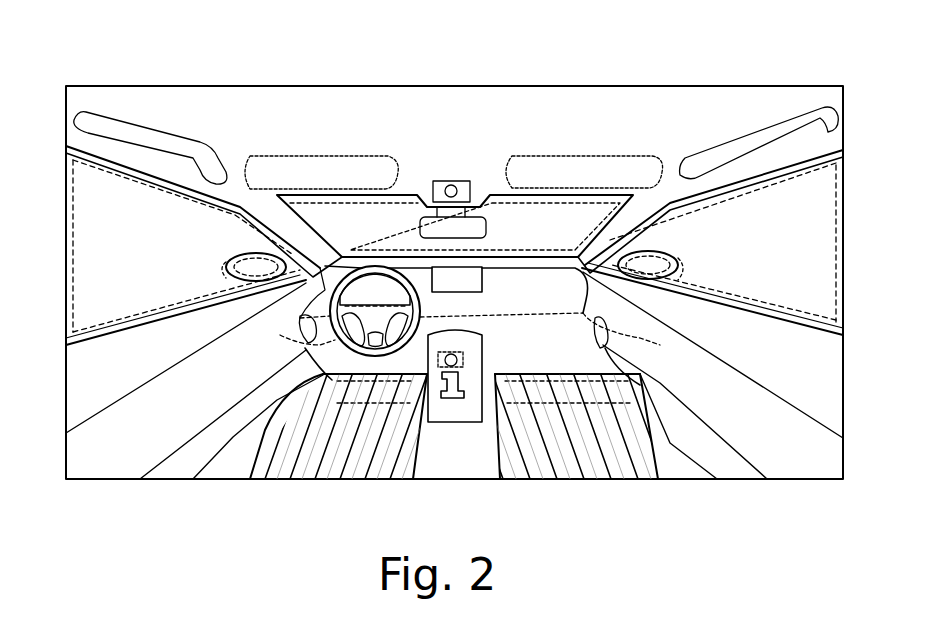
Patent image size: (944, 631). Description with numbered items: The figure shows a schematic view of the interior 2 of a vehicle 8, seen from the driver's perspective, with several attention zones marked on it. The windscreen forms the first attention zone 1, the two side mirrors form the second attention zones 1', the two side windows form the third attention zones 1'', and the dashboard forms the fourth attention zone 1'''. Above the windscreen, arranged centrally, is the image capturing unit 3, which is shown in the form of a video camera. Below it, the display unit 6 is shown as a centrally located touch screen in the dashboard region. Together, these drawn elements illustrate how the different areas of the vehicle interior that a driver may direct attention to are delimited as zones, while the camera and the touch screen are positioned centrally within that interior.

The vehicle 8 is at (86, 78).
The interior 2 is at (678, 94).
The first attention zone 1 is at (455, 144).
The second attention zone 1' is at (513, 156).
The third attention zone 1'' is at (460, 252).
The fourth attention zone 1''' is at (339, 194).
The image capturing unit 3 is at (462, 182).
The display unit 6 is at (473, 276).